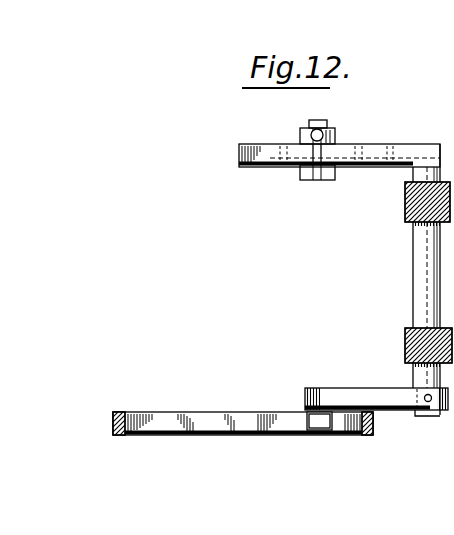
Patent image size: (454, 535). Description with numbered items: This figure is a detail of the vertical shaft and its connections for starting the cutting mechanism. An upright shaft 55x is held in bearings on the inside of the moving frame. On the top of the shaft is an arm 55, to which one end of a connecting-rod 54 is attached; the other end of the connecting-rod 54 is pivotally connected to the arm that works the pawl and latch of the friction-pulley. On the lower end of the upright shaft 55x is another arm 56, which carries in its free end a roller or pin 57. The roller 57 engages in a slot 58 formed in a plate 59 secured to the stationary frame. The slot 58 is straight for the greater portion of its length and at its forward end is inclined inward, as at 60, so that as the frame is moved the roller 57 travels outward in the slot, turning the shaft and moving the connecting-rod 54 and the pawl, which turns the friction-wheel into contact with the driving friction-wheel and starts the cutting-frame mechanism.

The connecting-rod 54 is at (338, 133).
The arm 55 is at (258, 168).
The upright shaft 55x is at (413, 288).
The arm 56 is at (320, 396).
The roller or pin 57 is at (304, 436).
The slot 58 is at (185, 407).
The plate 59 is at (112, 429).
The inclined portion of slot 60 is at (356, 437).